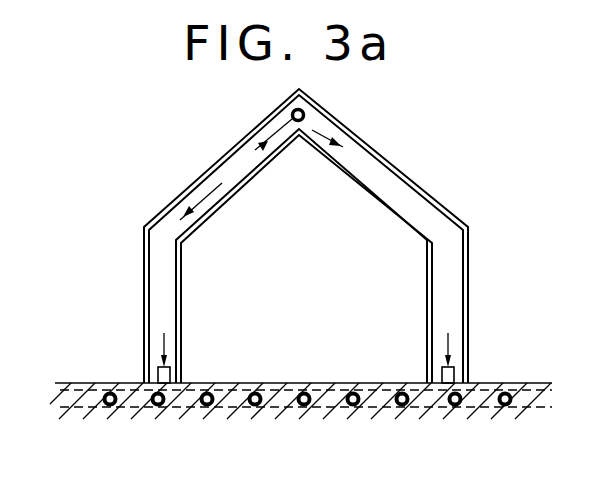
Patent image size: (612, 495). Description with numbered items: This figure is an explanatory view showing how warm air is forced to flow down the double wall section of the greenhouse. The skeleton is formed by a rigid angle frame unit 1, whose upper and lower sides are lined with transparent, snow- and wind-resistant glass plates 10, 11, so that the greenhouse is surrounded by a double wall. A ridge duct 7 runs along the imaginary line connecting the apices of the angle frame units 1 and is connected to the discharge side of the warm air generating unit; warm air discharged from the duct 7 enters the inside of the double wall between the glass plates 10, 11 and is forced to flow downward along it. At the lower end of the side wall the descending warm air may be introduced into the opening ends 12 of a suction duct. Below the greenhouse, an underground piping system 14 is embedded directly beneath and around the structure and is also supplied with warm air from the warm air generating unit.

The angle frame unit 1 is at (298, 236).
The duct 7 is at (291, 114).
The glass plate 10 is at (186, 193).
The glass plate 11 is at (235, 188).
The opening end 12 is at (443, 375).
The underground piping system 14 is at (505, 392).